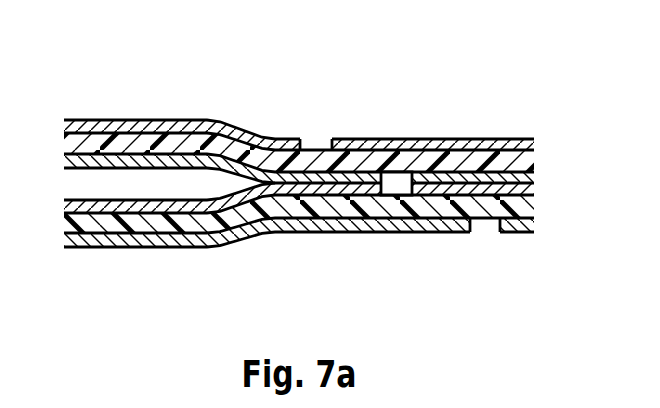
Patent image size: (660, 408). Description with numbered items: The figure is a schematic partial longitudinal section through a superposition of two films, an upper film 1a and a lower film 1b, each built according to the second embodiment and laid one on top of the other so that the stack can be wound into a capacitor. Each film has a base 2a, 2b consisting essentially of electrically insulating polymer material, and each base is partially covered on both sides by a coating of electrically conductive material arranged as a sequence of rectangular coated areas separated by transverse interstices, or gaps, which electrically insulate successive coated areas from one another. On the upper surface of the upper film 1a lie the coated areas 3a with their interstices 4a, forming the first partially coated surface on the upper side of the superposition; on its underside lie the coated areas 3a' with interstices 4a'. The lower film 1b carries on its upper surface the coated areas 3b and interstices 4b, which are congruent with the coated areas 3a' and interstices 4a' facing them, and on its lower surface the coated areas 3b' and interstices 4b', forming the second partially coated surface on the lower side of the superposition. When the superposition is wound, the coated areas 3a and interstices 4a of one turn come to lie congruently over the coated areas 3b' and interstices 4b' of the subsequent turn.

The upper film 1a is at (341, 186).
The lower film 1b is at (340, 254).
The base of upper film 2a is at (250, 157).
The base of lower film 2b is at (339, 207).
The coated areas on upper surface of upper film 3a is at (299, 98).
The coated areas on lower surface of upper film 3a' is at (299, 115).
The coated areas on upper surface of lower film 3b is at (299, 254).
The coated areas on lower surface of lower film 3b' is at (299, 272).
The interstices in upper coating of upper film 4a is at (314, 98).
The interstices in lower coating of upper film 4a' is at (401, 121).
The interstices in upper coating of lower film 4b is at (399, 255).
The interstices in lower coating of lower film 4b' is at (487, 272).